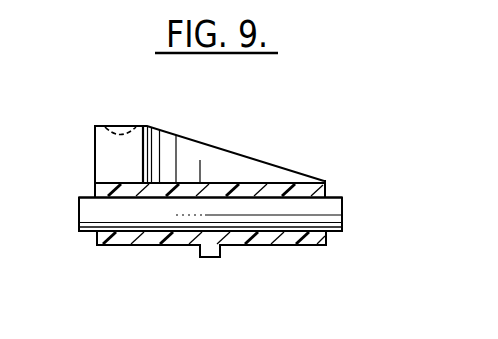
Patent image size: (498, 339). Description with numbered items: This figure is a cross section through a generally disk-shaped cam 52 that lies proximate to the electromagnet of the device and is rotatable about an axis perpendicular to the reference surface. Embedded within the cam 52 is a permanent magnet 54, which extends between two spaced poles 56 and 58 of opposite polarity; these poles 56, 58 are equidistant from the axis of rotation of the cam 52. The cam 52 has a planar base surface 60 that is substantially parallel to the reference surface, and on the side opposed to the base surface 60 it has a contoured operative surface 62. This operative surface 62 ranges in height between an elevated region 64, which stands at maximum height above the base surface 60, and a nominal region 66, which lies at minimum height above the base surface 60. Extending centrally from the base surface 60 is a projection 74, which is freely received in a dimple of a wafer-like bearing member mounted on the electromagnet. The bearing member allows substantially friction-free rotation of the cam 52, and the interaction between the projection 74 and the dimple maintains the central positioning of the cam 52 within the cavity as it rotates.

The cam 52 is at (258, 152).
The permanent magnet 54 is at (152, 213).
The pole 56 is at (79, 208).
The pole 58 is at (342, 213).
The planar base surface 60 is at (273, 247).
The contoured operative surface 62 is at (211, 147).
The elevated region 64 is at (100, 125).
The nominal region 66 is at (307, 178).
The projection 74 is at (215, 258).